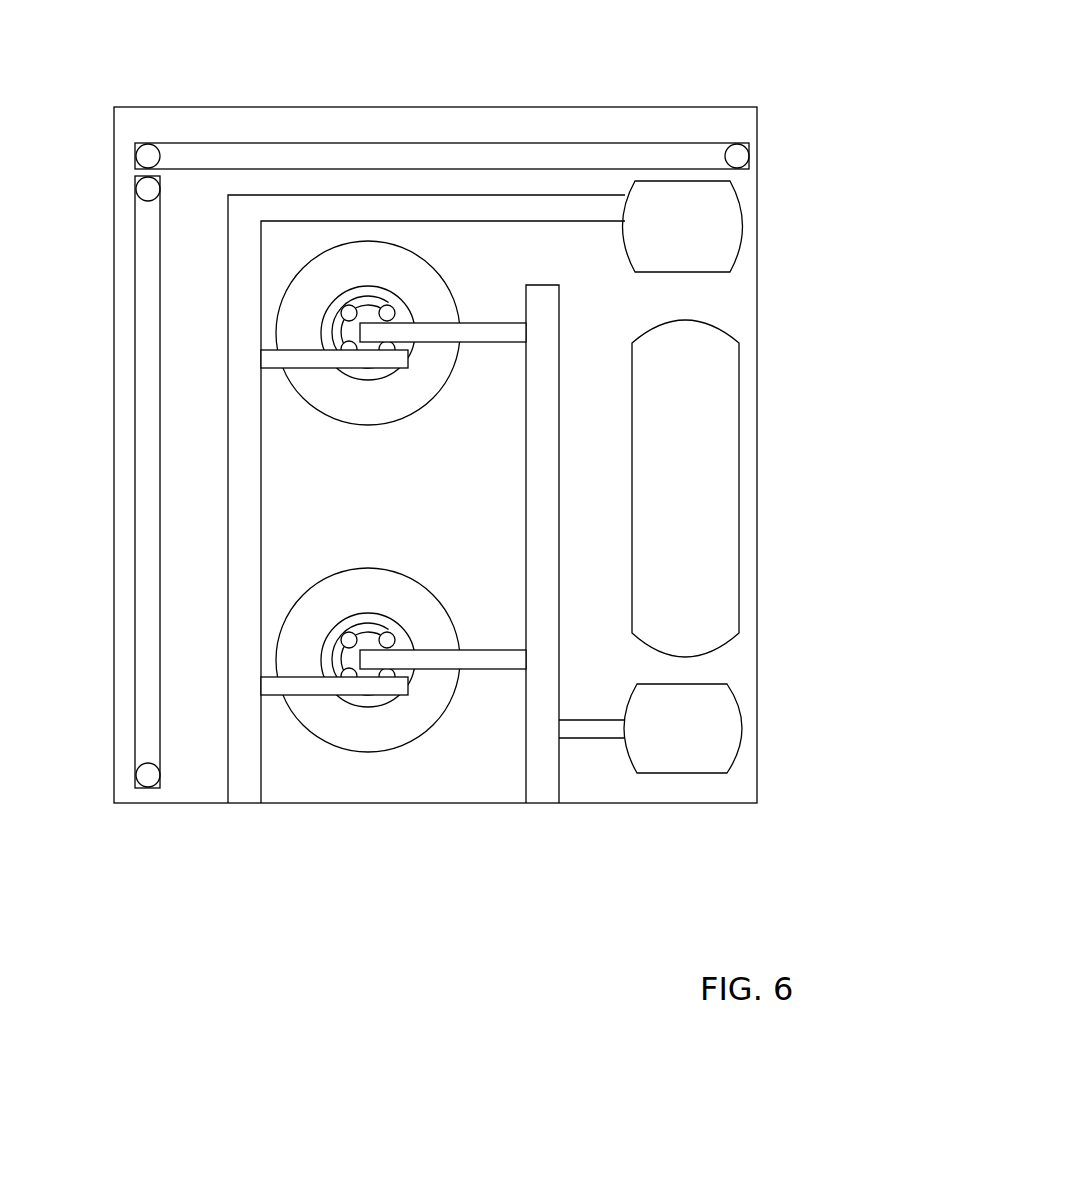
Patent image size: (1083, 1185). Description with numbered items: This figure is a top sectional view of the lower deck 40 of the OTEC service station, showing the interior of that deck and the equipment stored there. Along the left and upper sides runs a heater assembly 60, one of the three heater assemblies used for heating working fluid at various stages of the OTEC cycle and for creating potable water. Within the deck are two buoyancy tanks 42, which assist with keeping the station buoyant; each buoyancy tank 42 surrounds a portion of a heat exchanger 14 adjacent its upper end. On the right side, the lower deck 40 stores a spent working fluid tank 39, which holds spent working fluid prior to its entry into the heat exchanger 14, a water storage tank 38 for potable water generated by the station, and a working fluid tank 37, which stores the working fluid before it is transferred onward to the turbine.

The lower deck 40 is at (757, 218).
The second heater assembly 60 is at (252, 143).
The heat exchanger 14 is at (347, 292).
The buoyancy tank 42 is at (437, 264).
The spent working fluid tank 39 is at (687, 212).
The water storage tank 38 is at (710, 540).
The working fluid tank 37 is at (685, 747).